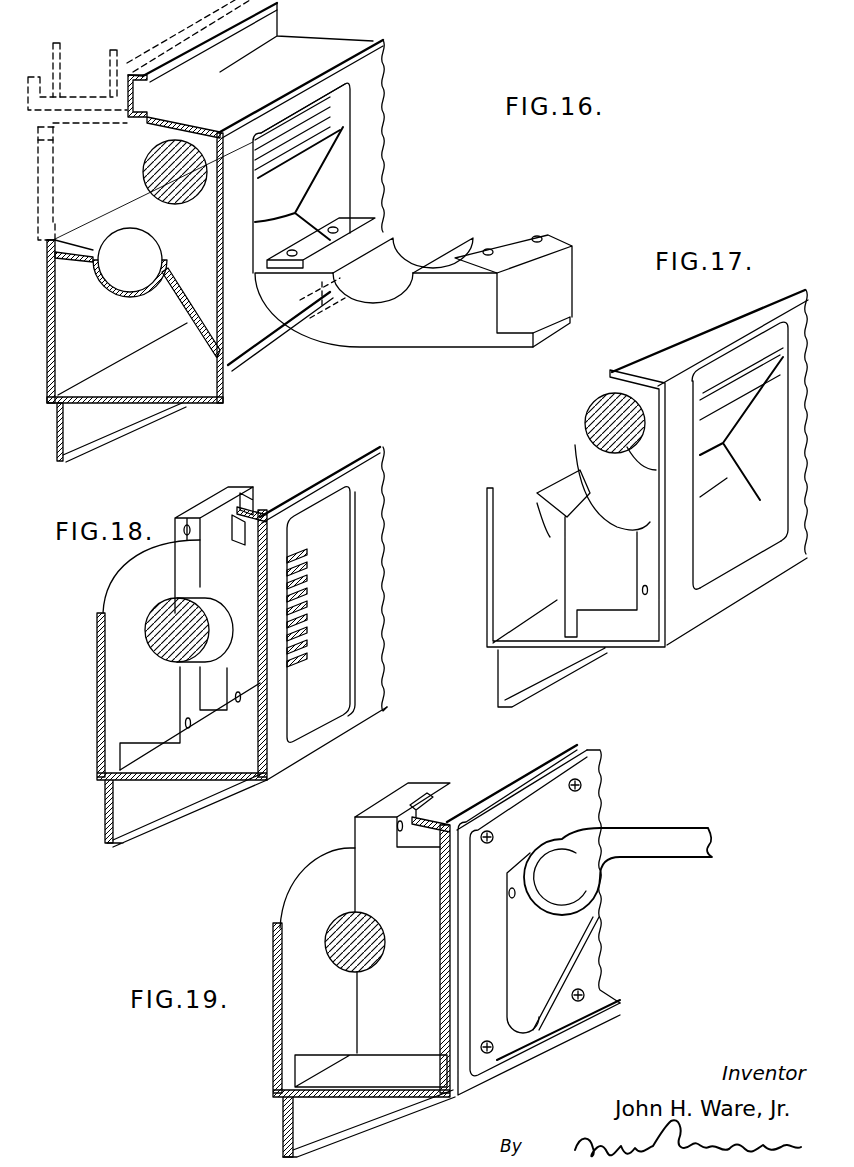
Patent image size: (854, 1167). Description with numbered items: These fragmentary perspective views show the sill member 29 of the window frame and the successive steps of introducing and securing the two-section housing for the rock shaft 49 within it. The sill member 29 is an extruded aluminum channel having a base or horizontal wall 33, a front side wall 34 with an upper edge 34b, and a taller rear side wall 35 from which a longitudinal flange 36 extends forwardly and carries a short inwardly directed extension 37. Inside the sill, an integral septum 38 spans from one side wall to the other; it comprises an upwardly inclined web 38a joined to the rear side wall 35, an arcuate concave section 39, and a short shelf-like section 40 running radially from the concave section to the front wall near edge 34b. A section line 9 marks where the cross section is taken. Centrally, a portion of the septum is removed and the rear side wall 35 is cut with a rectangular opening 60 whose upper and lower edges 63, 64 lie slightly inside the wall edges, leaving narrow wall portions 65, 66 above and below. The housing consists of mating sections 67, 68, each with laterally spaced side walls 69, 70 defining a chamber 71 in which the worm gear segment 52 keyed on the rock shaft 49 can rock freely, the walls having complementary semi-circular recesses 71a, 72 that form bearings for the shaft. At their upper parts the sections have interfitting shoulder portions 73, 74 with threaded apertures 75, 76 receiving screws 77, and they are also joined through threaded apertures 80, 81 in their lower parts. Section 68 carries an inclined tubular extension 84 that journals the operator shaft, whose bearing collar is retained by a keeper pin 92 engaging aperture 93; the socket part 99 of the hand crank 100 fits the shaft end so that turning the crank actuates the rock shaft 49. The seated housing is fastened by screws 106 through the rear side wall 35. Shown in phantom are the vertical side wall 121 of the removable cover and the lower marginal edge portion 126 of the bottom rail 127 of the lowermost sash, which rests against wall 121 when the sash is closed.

In FIG. 16, the section line 9- 9 is at (297, 132).
In FIG. 16, the sill member 29 is at (209, 409).
In FIG. 17, the sill member 29 is at (642, 654).
In FIG. 18, the sill member 29 is at (251, 790).
In FIG. 19, the sill member 29 is at (439, 1098).
In FIG. 16, the base or intermediate horizontal wall 33 is at (180, 407).
In FIG. 16, the front side wall 34 is at (55, 352).
In FIG. 16, the upper edge of front side wall 34b is at (107, 205).
In FIG. 16, the rear side wall 35 is at (243, 363).
In FIG. 16, the longitudinal flange 36 is at (322, 55).
In FIG. 16, the inwardly directed extension 37 is at (265, 27).
In FIG. 16, the septum 38 is at (145, 310).
In FIG. 17, the septum 38 is at (728, 477).
In FIG. 16, the upwardly disposed leg section or web 38a is at (180, 238).
In FIG. 17, the upwardly disposed leg section or web 38a is at (735, 412).
In FIG. 16, the intermediate concave section 39 is at (120, 297).
In FIG. 16, the shelf-like section 40 is at (90, 240).
In FIG. 16, the rock shaft 49 is at (152, 170).
In FIG. 17, the rock shaft 49 is at (597, 412).
In FIG. 18, the rock shaft 49 is at (163, 657).
In FIG. 19, the rock shaft 49 is at (377, 940).
In FIG. 18, the worm gear segment 52 is at (287, 625).
In FIG. 16, the rectangular shaped opening 60 is at (347, 165).
In FIG. 17, the rectangular shaped opening 60 is at (742, 563).
In FIG. 18, the rectangular shaped opening 60 is at (355, 590).
In FIG. 19, the rectangular shaped opening 60 is at (533, 920).
In FIG. 16, the upper edge of opening 63 is at (317, 82).
In FIG. 17, the upper edge of opening 63 is at (723, 353).
In FIG. 16, the lower edge of opening 64 is at (310, 337).
In FIG. 17, the lower edge of opening 64 is at (720, 587).
In FIG. 17, the narrow wall portion 65 is at (680, 302).
In FIG. 17, the narrow wall portion 66 is at (768, 573).
In FIG. 16, the housing section 67 is at (478, 339).
In FIG. 17, the housing section 67 is at (577, 567).
In FIG. 18, the housing section 67 is at (127, 582).
In FIG. 19, the housing section 67 is at (312, 883).
In FIG. 19, the housing section 68 is at (410, 1037).
In FIG. 16, the side wall of housing section 69 is at (427, 337).
In FIG. 16, the side wall of housing section 70 is at (513, 233).
In FIG. 16, the chamber 71 is at (480, 250).
In FIG. 16, the semi-circular recessed portion 71a is at (372, 305).
In FIG. 19, the semi-circular recessed portion 71a is at (340, 957).
In FIG. 16, the semi-circular recessed portion 72 is at (405, 260).
In FIG. 16, the interfitting shoulder portion 73 is at (377, 217).
In FIG. 19, the interfitting shoulder portion 73 is at (358, 829).
In FIG. 19, the interfitting shoulder portion 74 is at (383, 820).
In FIG. 18, the threaded aperture 75 is at (197, 517).
In FIG. 18, the threaded aperture 76 is at (253, 493).
In FIG. 19, the screw 77 is at (418, 795).
In FIG. 18, the threaded aperture 80 is at (188, 728).
In FIG. 18, the threaded aperture 81 is at (238, 703).
In FIG. 19, the tubular extension 84 is at (580, 950).
In FIG. 19, the keeper pin 92 is at (512, 888).
In FIG. 19, the transversely extending aperture 93 is at (518, 883).
In FIG. 19, the socket part 99 is at (587, 895).
In FIG. 19, the hand crank 100 is at (693, 828).
In FIG. 19, the screw 106 is at (582, 787).
In FIG. 16, the vertically extending side wall 121 is at (134, 120).
In FIG. 16, the lower marginal edge portion 126 is at (53, 142).
In FIG. 16, the bottom rail 127 is at (83, 90).